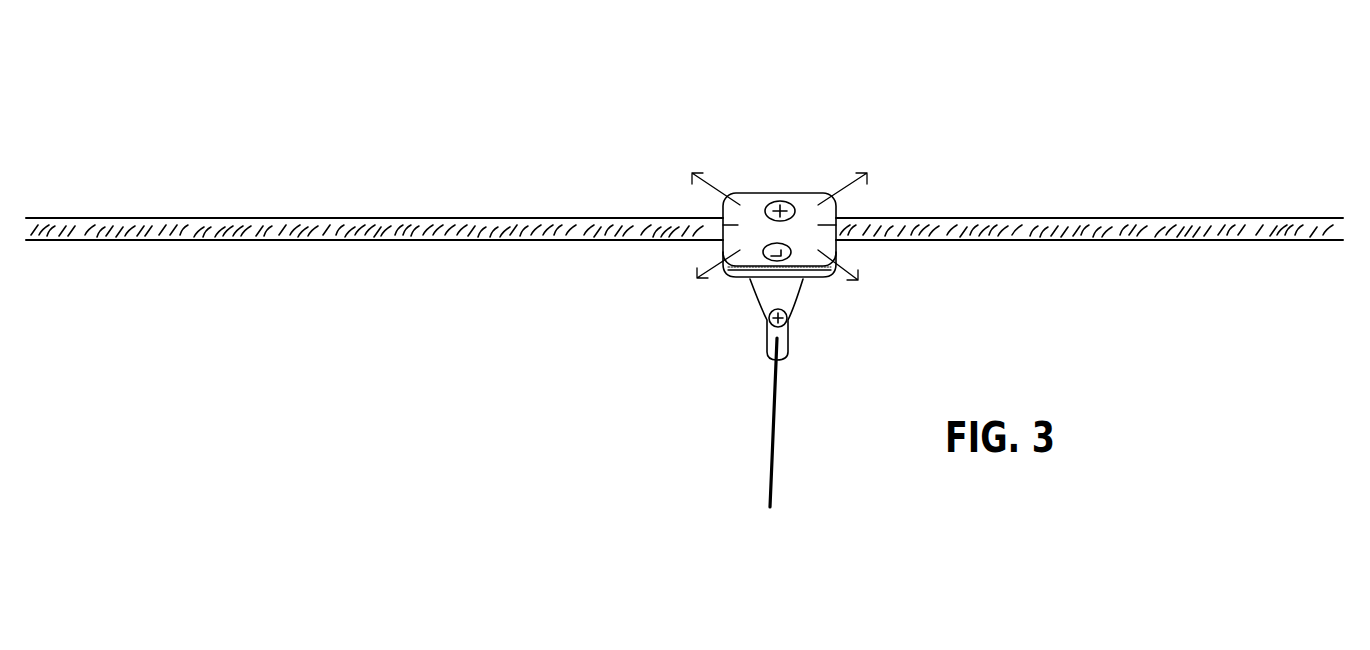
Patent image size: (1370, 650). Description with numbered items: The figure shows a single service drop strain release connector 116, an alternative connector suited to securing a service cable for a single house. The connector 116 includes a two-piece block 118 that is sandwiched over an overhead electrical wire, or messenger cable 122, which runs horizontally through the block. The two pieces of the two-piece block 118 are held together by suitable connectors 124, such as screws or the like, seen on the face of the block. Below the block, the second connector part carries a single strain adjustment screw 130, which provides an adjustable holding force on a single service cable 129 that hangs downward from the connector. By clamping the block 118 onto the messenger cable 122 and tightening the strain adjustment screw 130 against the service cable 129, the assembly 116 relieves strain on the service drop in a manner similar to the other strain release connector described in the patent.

The strain release connector 116 is at (913, 112).
The two-piece block 118 is at (755, 262).
The overhead electrical wire/messenger cable 122 is at (1167, 228).
The connectors 124 is at (786, 248).
The service cable 129 is at (770, 457).
The strain adjustment screw 130 is at (770, 318).